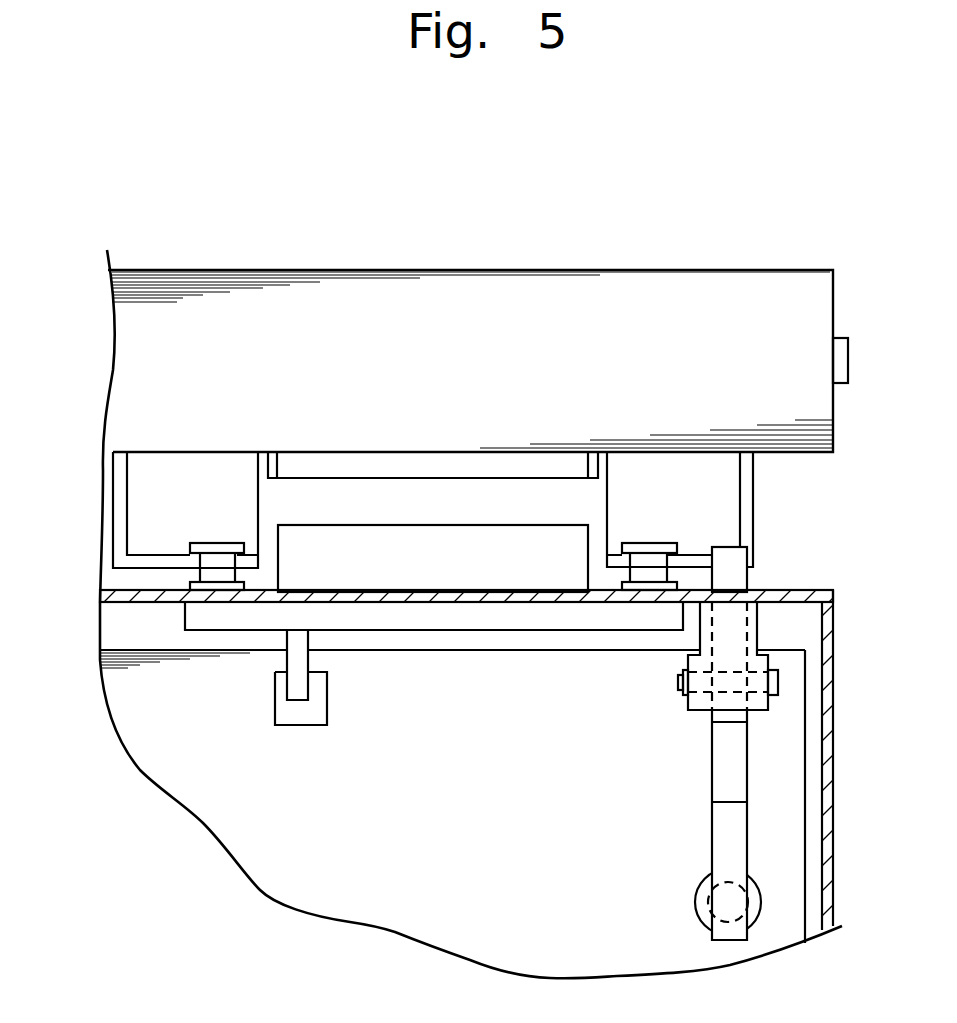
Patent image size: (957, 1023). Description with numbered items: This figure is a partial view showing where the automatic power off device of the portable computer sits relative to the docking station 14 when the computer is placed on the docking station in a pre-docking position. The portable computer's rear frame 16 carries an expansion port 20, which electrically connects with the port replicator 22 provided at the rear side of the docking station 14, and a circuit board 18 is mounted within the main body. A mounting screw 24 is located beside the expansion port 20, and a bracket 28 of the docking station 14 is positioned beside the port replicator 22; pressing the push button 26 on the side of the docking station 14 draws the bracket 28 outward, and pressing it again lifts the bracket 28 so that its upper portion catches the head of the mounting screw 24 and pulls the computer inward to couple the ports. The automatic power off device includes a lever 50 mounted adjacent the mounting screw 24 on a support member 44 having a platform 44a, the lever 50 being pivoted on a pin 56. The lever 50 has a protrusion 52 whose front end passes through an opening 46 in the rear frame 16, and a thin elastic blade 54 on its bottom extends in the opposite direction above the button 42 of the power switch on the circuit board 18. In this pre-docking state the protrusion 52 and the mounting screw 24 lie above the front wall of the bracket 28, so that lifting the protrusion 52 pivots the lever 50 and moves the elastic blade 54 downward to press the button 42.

The docking station 14 is at (464, 268).
The rear frame 16 is at (135, 586).
The circuit board 18 is at (783, 735).
The expansion port 20 is at (410, 545).
The port replicator 22 is at (464, 470).
The mounting screw 24 is at (200, 543).
The push button 26 is at (842, 360).
The bracket 28 is at (753, 474).
The button 42 is at (745, 900).
The support member 44 is at (762, 623).
The platform 44a is at (706, 612).
The opening 46 is at (750, 590).
The lever 50 is at (740, 782).
The protrusion 52 is at (733, 558).
The elastic blade 54 is at (728, 850).
The pin 56 is at (778, 680).